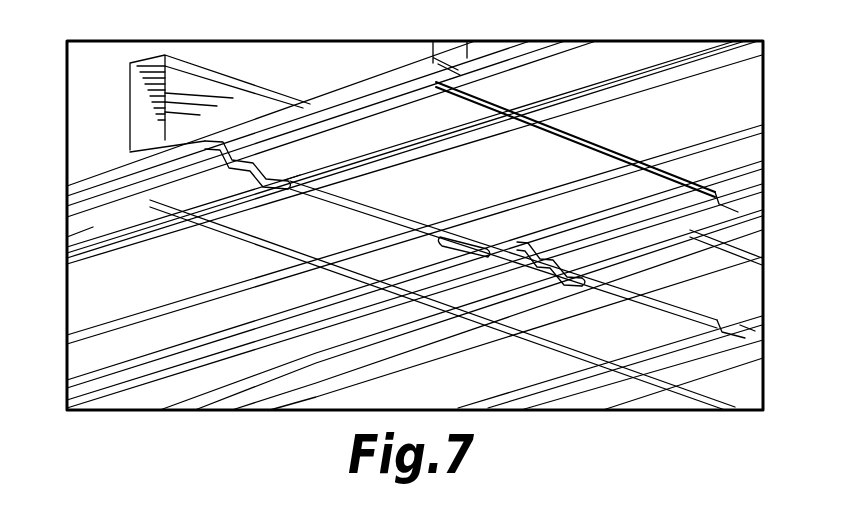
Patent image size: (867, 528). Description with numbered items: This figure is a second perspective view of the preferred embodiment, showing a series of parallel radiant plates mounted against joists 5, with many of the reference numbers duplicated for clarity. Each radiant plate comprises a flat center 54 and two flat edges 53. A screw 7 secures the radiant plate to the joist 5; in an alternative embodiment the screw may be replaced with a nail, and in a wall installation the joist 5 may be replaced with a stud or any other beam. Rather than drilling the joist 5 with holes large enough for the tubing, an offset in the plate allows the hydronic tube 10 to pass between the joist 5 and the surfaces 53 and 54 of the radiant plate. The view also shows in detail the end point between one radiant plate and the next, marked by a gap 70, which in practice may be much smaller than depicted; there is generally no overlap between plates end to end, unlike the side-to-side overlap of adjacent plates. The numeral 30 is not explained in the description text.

The joist 5 is at (257, 86).
The screw 7 is at (170, 163).
The hydronic tube 10 is at (290, 190).
The main tee runner 30 is at (120, 240).
The flat edge 53 is at (503, 210).
The flat center 54 is at (793, 270).
The gap 70 is at (753, 330).